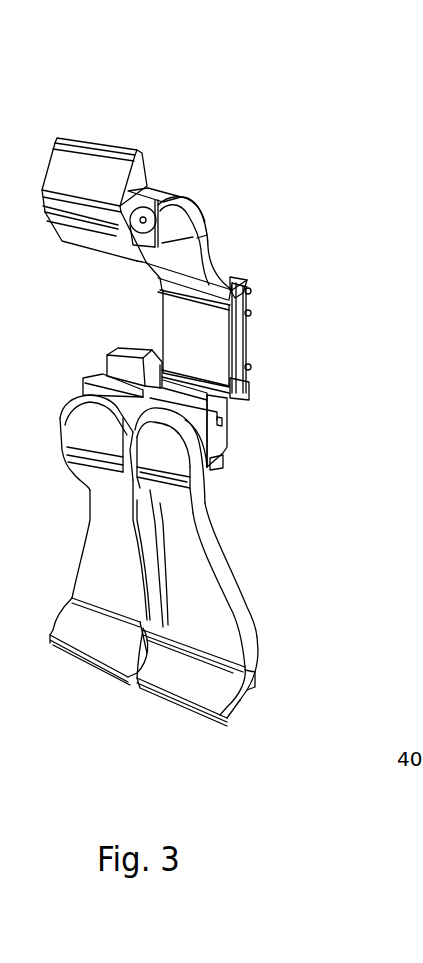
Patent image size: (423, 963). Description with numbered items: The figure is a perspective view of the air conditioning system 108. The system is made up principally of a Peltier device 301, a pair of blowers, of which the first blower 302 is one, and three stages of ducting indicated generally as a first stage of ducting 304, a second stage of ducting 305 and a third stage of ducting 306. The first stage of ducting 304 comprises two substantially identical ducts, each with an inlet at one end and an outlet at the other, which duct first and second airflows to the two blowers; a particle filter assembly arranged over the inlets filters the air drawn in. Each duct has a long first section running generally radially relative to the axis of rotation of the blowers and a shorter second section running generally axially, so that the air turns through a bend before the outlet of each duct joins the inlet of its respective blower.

The air conditioning system 108 is at (265, 110).
The third stage of ducting 306 is at (289, 235).
The Peltier device 301 is at (289, 338).
The second stage of ducting 305 is at (289, 389).
The first blower 302 is at (289, 430).
The first stage of ducting 304 is at (289, 564).